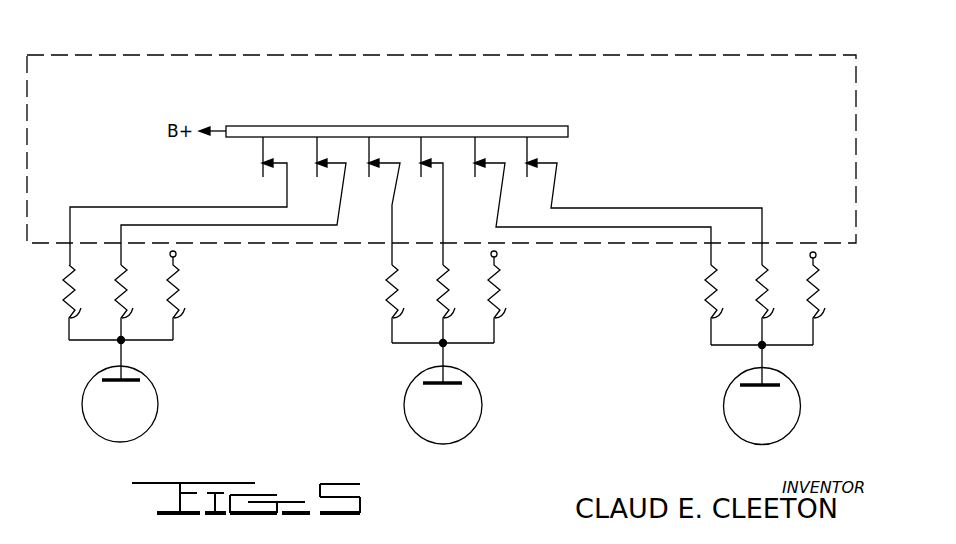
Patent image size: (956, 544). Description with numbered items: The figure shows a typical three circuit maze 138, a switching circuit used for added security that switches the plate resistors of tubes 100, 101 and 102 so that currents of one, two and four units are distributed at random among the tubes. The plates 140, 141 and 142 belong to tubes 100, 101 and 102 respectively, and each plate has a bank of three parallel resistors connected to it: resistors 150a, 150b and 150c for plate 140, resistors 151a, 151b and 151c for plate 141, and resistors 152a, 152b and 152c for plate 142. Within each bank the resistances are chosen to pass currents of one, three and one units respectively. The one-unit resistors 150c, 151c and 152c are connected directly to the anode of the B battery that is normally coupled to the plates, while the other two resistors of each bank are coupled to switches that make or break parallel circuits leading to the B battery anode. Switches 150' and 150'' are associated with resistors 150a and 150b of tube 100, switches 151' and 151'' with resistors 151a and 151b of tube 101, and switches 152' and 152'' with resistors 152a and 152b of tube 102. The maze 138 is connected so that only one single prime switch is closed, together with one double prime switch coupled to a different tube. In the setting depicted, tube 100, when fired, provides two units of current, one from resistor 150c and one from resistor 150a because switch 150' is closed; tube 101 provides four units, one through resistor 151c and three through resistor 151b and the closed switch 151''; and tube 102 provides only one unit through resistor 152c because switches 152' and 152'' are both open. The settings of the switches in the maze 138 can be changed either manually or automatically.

The three circuit maze 138 is at (441, 135).
The single prime switch 150' is at (178, 201).
The double prime switch 150'' is at (233, 201).
The single prime switch 151' is at (376, 201).
The double prime switch 151'' is at (426, 201).
The single prime switch 152' is at (585, 201).
The double prime switch 152'' is at (636, 201).
The plate resistor 150a is at (89, 302).
The plate resistor 150b is at (142, 302).
The plate resistor 150c is at (194, 292).
The plate resistor 151a is at (412, 304).
The plate resistor 151b is at (464, 304).
The plate resistor 151c is at (515, 294).
The plate resistor 152a is at (731, 305).
The plate resistor 152b is at (783, 305).
The plate resistor 152c is at (834, 295).
The plate 140 is at (103, 381).
The plate 141 is at (424, 384).
The plate 142 is at (742, 386).
The tube 100 is at (149, 428).
The tube 101 is at (472, 431).
The tube 102 is at (790, 432).